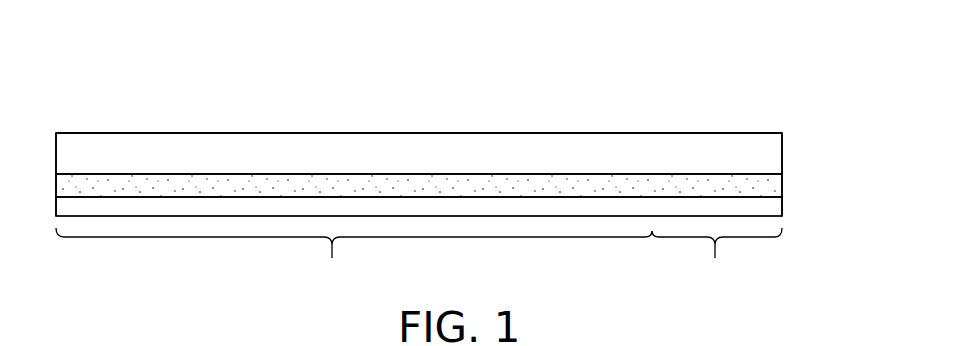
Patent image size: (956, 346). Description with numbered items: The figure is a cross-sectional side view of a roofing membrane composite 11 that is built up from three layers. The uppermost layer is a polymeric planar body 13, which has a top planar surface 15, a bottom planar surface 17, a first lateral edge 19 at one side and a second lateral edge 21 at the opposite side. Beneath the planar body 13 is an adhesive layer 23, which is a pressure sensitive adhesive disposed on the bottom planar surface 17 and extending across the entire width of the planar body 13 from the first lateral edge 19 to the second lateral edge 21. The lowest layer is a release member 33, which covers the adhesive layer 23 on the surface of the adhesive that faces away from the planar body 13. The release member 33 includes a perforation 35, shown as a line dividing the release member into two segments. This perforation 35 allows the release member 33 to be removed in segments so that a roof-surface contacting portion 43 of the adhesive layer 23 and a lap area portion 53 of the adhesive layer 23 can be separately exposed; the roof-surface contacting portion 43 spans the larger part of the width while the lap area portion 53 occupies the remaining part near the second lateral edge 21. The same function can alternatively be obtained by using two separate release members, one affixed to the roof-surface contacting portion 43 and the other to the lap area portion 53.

The membrane composite 11 is at (574, 82).
The polymeric planar body 13 is at (240, 131).
The top planar surface 15 is at (335, 133).
The bottom planar surface 17 is at (380, 173).
The first lateral edge 19 is at (56, 152).
The second lateral edge 21 is at (783, 151).
The adhesive layer 23 is at (57, 183).
The release member 33 is at (785, 209).
The perforation 35 is at (653, 216).
The roof-surface contacting portion 43 is at (354, 257).
The lap area portion 53 is at (717, 257).